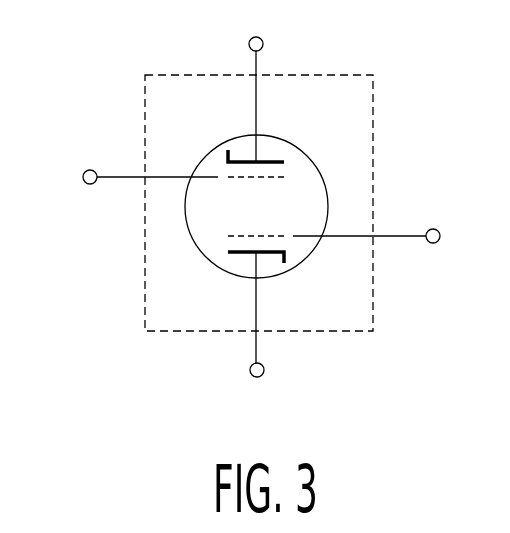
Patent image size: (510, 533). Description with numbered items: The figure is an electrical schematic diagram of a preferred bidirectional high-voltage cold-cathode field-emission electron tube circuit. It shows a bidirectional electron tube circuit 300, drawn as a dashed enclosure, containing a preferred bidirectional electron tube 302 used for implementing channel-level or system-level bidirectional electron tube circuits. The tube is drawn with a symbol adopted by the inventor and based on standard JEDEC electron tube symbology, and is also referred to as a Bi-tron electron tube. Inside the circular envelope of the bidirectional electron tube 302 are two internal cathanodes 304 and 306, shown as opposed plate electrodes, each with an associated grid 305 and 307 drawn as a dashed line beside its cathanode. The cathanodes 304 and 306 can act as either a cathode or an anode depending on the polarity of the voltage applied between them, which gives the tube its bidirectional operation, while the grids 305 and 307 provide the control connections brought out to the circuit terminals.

The bidirectional electron tube circuit 300 is at (145, 254).
The bidirectional electron tube 302 is at (299, 145).
The cathanode 304 is at (238, 158).
The grid 305 is at (120, 177).
The cathanode 306 is at (273, 262).
The grid 307 is at (392, 232).